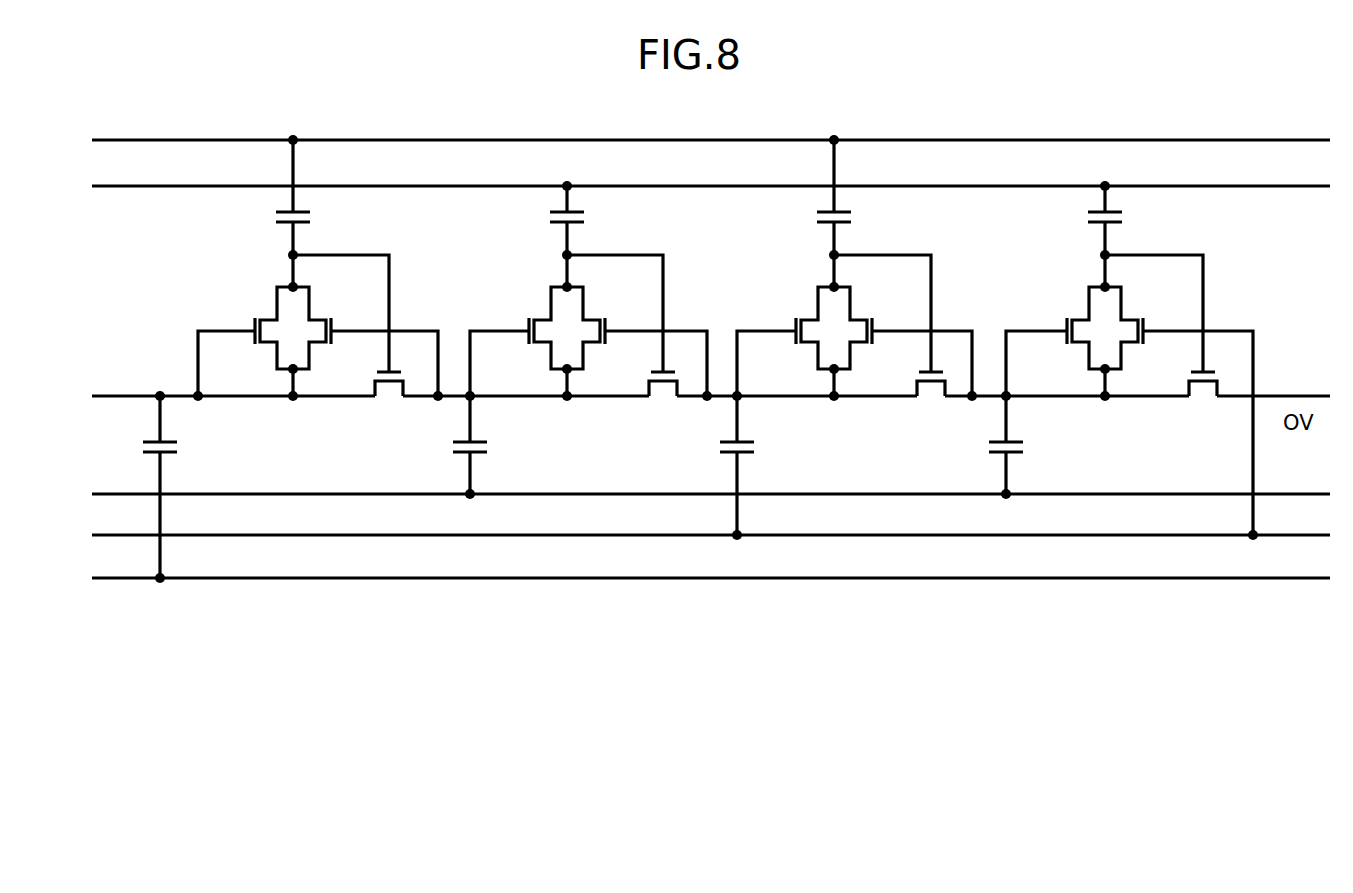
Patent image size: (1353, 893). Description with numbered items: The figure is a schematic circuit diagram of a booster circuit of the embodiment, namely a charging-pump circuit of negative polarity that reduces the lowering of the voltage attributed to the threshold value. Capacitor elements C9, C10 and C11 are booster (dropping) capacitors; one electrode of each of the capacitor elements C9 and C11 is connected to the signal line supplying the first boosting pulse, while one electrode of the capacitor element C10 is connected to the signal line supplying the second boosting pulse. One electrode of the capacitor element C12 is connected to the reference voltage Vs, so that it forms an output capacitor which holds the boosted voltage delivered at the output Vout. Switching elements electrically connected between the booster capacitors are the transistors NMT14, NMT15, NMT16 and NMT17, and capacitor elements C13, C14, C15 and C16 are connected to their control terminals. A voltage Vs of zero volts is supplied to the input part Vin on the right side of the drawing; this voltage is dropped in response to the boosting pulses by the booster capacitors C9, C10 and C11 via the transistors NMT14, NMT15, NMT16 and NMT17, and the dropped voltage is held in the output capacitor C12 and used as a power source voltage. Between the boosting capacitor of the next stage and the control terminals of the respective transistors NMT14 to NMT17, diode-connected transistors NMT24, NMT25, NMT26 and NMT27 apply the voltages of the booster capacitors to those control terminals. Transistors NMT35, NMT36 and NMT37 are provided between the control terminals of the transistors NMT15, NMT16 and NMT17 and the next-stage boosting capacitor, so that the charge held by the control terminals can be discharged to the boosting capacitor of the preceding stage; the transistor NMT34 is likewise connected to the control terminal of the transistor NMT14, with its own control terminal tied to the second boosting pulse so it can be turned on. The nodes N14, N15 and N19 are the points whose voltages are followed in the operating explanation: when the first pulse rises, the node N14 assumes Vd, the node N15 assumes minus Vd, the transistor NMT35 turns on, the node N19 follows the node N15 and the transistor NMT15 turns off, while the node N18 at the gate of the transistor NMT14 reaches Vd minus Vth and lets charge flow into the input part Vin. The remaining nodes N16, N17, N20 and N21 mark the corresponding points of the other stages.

The output voltage terminal Vout is at (672, 380).
The input part Vin is at (1291, 382).
The reference voltage Vs is at (688, 579).
The booster capacitor C9 is at (1025, 447).
The booster capacitor C10 is at (762, 468).
The booster capacitor C11 is at (495, 447).
The output capacitor C12 is at (183, 487).
The capacitor element C13 is at (1077, 218).
The capacitor element C14 is at (806, 195).
The capacitor element C15 is at (538, 218).
The capacitor element C16 is at (264, 195).
The node N14 is at (1123, 380).
The node N15 is at (861, 380).
The node N16 is at (594, 380).
The node N17 is at (322, 380).
The node N18 is at (1077, 262).
The node N19 is at (806, 262).
The node N20 is at (539, 262).
The node N21 is at (263, 262).
The transistor NMT14 is at (1171, 340).
The transistor NMT15 is at (896, 340).
The transistor NMT16 is at (627, 340).
The transistor NMT17 is at (348, 340).
The diode-connected transistor NMT24 is at (1069, 328).
The diode-connected transistor NMT25 is at (798, 328).
The diode-connected transistor NMT26 is at (527, 328).
The diode-connected transistor NMT27 is at (252, 328).
The transistor NMT34 is at (1192, 420).
The transistor NMT35 is at (916, 351).
The transistor NMT36 is at (649, 351).
The transistor NMT37 is at (379, 351).